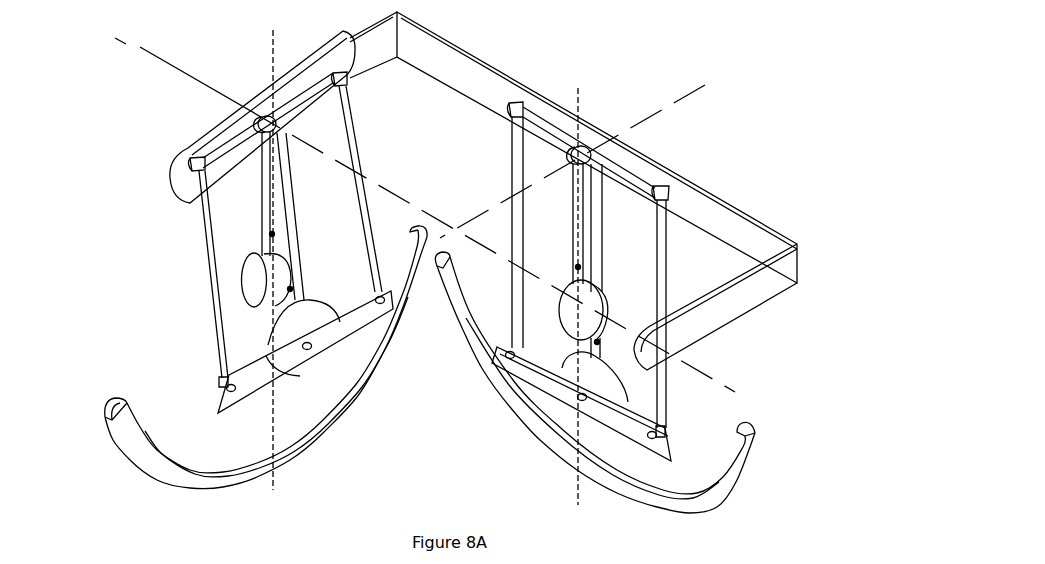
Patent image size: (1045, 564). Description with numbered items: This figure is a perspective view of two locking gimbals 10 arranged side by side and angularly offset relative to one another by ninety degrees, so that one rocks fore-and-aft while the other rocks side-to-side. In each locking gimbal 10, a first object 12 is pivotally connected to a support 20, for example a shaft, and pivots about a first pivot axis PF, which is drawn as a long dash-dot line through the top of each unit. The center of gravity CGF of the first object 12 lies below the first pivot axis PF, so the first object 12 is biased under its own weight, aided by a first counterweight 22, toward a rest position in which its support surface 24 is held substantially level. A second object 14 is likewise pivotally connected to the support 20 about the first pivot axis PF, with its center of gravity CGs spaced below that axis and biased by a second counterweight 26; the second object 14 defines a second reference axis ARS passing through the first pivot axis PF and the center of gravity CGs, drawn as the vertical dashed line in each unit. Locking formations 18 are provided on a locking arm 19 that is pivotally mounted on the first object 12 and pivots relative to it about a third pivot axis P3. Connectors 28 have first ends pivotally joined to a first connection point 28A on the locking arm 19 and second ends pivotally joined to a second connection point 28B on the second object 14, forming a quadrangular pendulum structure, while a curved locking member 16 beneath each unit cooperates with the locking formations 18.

The locking gimbal 10 is at (105, 108).
The first object 12 is at (299, 302).
The second object 14 is at (262, 228).
The locking member 16 is at (182, 484).
The locking formation 18 is at (218, 412).
The locking arm 19 is at (257, 390).
The support 20 is at (264, 118).
The first counterweight 22 is at (313, 314).
The support surface 24 is at (297, 77).
The second counterweight 26 is at (258, 288).
The connector 28 is at (358, 157).
The first connection point 28A is at (218, 385).
The second connection point 28B is at (184, 158).
The third pivot axis P3 is at (310, 350).
The first pivot axis PF is at (425, 209).
The center of gravity of the second object CGs is at (275, 234).
The center of gravity of the first object CGF is at (293, 287).
The second reference axis ARS is at (276, 479).